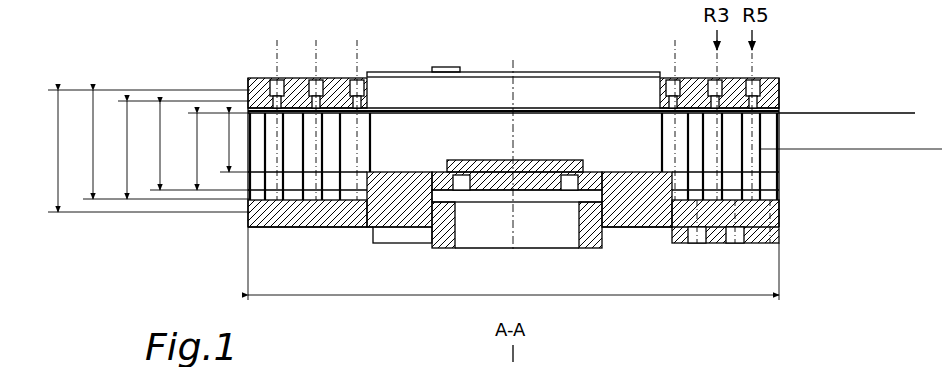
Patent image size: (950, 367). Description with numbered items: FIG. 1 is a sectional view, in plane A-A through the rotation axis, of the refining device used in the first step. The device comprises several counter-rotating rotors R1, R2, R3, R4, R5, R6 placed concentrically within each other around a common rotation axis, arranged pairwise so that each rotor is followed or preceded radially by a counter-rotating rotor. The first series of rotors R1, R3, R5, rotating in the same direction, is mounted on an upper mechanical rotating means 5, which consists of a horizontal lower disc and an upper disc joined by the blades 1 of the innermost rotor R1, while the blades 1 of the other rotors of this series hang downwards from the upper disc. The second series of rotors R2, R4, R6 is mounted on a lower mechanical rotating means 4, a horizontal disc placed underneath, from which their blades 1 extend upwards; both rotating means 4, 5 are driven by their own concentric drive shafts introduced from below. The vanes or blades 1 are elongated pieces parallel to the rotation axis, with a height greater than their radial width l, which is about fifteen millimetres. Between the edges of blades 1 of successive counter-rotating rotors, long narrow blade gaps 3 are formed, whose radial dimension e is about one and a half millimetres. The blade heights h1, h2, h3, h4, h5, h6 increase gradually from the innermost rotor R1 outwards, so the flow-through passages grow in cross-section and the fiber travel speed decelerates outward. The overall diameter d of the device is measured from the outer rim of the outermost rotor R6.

The vanes or blades 1 is at (668, 137).
The blade gaps 3 is at (780, 158).
The mechanical rotating means 4 is at (635, 222).
The mechanical rotating means 5 is at (328, 72).
The first rotor R1 is at (357, 50).
The second rotor R2 is at (697, 246).
The third rotor R3 is at (316, 50).
The fourth rotor R4 is at (735, 246).
The fifth rotor R5 is at (277, 50).
The sixth rotor R6 is at (770, 246).
The height of first rotor blades h1 is at (216, 142).
The height of second rotor blades h2 is at (181, 151).
The height of third rotor blades h3 is at (145, 146).
The height of fourth rotor blades h4 is at (112, 150).
The height of fifth rotor blades h5 is at (78, 144).
The height of sixth rotor blades h6 is at (41, 151).
The diameter of the device d is at (547, 295).
The dimension of the blade gap e is at (851, 137).
The dimension of the blades in the radial direction l is at (847, 100).